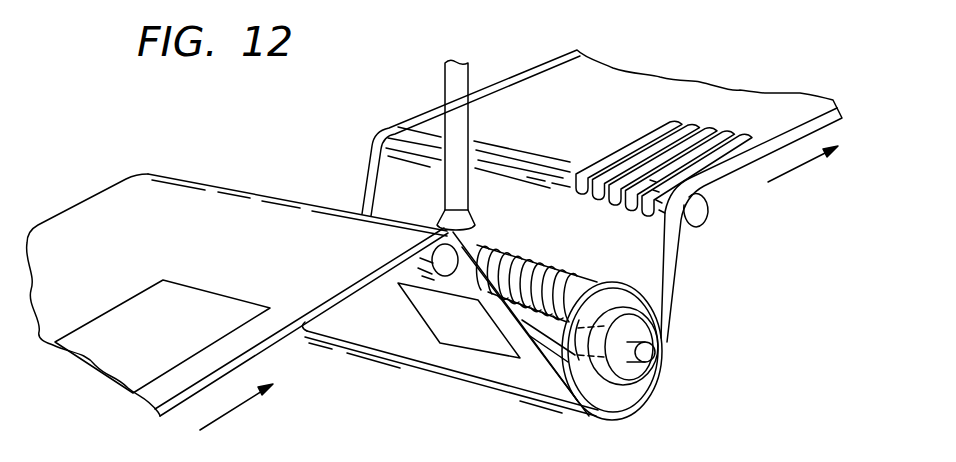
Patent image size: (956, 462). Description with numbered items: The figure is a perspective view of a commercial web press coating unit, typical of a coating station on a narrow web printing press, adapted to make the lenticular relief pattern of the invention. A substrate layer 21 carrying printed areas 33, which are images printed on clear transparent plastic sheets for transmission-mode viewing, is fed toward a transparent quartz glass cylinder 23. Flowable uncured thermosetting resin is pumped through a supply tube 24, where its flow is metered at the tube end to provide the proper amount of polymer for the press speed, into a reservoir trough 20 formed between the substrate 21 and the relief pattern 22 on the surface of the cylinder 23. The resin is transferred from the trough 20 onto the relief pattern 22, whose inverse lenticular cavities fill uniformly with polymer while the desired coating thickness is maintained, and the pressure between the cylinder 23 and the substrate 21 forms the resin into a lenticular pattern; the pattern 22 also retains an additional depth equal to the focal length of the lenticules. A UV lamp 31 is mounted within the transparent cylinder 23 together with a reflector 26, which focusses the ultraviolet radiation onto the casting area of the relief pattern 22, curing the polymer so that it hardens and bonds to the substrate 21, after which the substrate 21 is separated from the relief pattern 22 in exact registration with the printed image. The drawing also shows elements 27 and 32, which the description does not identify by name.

The reservoir trough 20 is at (476, 251).
The substrate layer 21 is at (175, 200).
The relief pattern 22 is at (527, 260).
The quartz glass cylinder 23 is at (617, 400).
The supply tube 24 is at (457, 105).
The reflector 26 is at (593, 310).
The ribs 27 is at (723, 137).
The UV lamp 31 is at (545, 326).
The conveyor belt 32 is at (527, 103).
The printed areas 33 is at (176, 338).